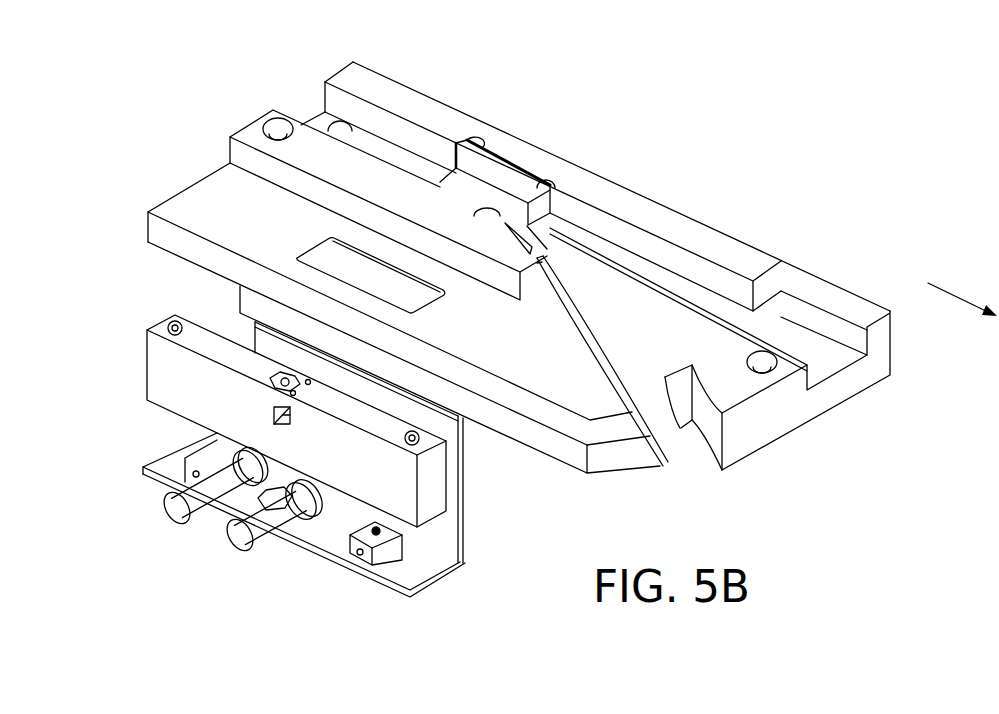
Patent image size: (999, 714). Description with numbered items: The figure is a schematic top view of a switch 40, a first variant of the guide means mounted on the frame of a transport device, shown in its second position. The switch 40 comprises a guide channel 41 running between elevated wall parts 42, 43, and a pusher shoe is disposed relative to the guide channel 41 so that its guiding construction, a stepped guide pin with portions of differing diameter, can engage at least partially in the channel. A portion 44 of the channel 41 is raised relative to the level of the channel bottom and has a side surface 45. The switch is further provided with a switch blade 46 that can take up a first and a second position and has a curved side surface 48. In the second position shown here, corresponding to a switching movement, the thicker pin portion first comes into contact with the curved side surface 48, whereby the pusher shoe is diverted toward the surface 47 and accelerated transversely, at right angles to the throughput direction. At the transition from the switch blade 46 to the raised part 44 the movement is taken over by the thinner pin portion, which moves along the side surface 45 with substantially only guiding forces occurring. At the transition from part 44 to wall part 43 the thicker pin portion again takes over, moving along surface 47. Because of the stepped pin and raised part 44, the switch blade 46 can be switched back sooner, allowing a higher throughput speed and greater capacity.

The switch 40 is at (724, 138).
The guide channel 41 is at (330, 118).
The elevated wall part 42 is at (252, 138).
The elevated wall part 43 is at (697, 330).
The raised portion of channel 44 is at (527, 237).
The side surface 45 is at (553, 242).
The switch blade 46 is at (510, 178).
The side surface 47 is at (662, 455).
The curved side surface 48 is at (483, 180).